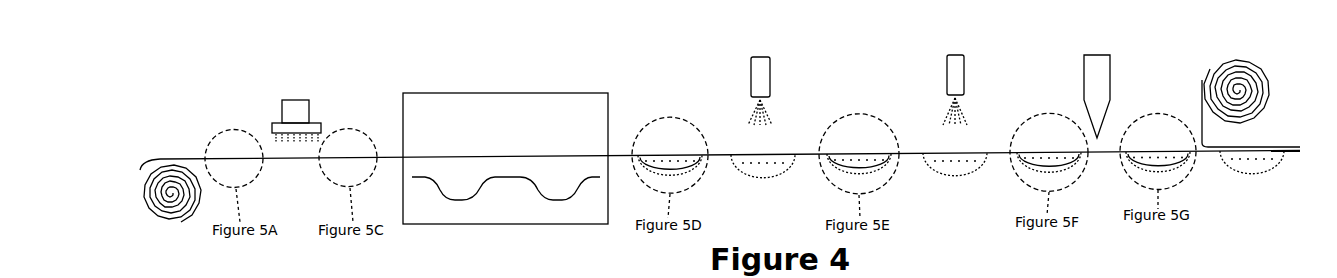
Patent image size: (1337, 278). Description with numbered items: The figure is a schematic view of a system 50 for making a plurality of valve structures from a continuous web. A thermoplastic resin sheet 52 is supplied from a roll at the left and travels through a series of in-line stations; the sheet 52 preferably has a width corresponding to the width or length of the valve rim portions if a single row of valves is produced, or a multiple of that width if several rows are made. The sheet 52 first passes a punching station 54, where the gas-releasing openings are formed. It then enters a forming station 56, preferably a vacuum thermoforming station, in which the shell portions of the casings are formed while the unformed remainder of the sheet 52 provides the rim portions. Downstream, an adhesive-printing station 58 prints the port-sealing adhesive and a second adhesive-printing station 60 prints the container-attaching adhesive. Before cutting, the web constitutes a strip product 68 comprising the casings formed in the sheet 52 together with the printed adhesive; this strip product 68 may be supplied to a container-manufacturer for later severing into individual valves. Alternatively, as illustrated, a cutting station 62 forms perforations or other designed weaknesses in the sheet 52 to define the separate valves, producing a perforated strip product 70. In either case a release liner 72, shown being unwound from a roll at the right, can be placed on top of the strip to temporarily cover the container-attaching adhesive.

The system 50 is at (846, 61).
The thermoplastic resin sheet 52 is at (146, 164).
The punching station 54 is at (282, 110).
The forming station 56 is at (442, 93).
The adhesive-printing station 58 is at (771, 90).
The adhesive-printing station 60 is at (964, 86).
The cutting station 62 is at (1110, 63).
The strip product 68 is at (1000, 153).
The strip product 70 is at (1195, 151).
The release liner 72 is at (1228, 78).